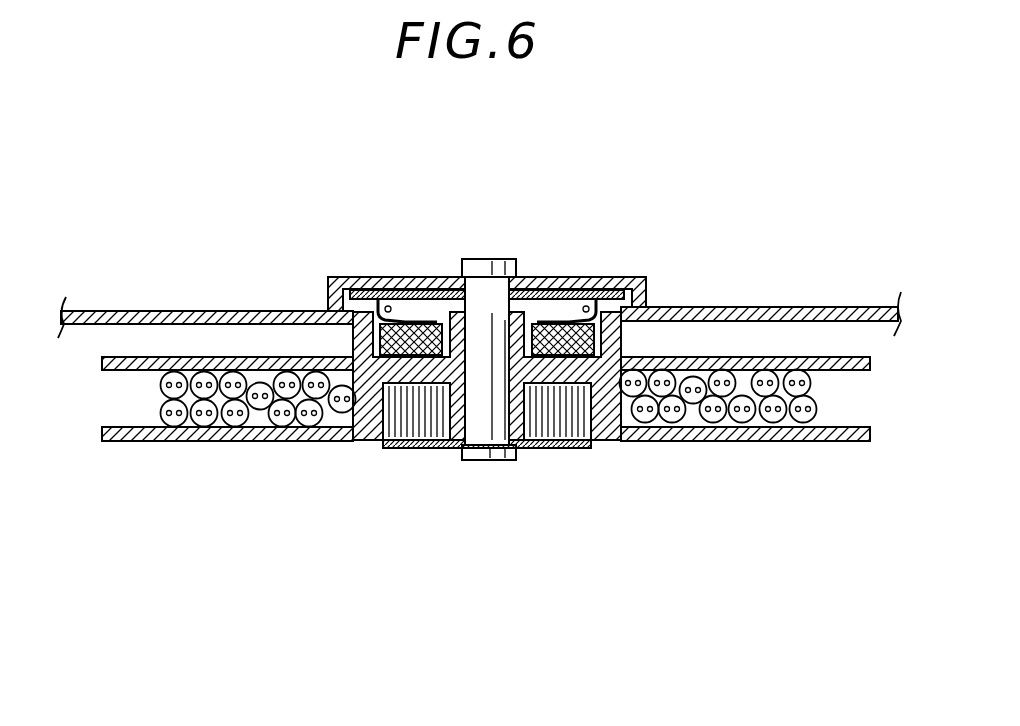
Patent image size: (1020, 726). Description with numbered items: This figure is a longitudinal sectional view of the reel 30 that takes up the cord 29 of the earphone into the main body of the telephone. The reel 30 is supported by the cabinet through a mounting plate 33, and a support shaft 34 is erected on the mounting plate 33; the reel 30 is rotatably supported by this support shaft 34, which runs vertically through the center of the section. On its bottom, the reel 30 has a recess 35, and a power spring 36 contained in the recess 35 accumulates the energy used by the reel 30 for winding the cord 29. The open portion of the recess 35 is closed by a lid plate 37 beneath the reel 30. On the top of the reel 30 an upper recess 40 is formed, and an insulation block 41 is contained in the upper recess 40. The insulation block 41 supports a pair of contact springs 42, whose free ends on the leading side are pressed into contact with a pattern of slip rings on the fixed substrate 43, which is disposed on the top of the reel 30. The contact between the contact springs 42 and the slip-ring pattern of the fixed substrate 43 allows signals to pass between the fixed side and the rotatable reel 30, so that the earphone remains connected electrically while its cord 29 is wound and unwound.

The cord 29 is at (230, 422).
The reel 30 is at (785, 441).
The mounting plate 33 is at (733, 307).
The support shaft 34 is at (490, 455).
The recess 35 is at (392, 448).
The power spring 36 is at (585, 446).
The lid plate 37 is at (437, 450).
The upper recess 40 is at (375, 289).
The insulation block 41 is at (598, 306).
The contact springs 42 is at (405, 289).
The fixed substrate 43 is at (358, 289).